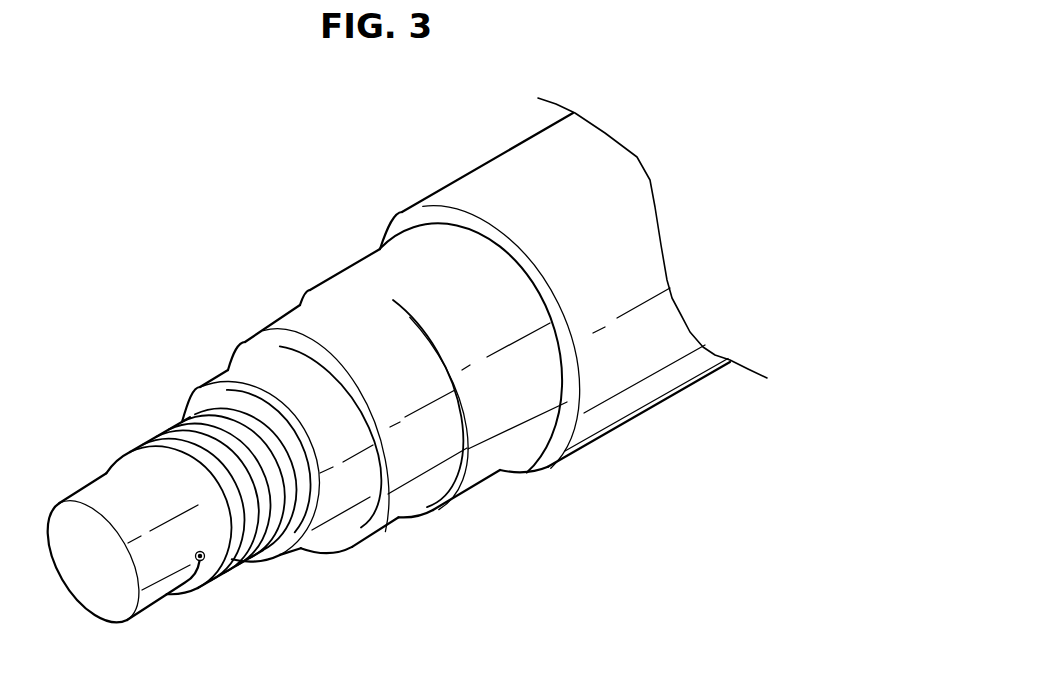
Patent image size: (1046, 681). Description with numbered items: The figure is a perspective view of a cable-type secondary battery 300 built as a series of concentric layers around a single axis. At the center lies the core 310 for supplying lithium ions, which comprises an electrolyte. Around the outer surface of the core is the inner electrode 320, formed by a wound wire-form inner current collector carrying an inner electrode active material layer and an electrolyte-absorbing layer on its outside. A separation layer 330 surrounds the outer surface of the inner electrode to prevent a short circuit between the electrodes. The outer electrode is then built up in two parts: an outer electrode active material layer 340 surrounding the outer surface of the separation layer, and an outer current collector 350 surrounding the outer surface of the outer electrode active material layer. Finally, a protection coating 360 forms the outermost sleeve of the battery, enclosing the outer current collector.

The cable-type secondary battery 300 is at (248, 253).
The core for supplying lithium ions 310 is at (157, 580).
The inner electrode 320 is at (237, 560).
The separation layer 330 is at (327, 525).
The outer electrode active material layer 340 is at (410, 497).
The outer current collector 350 is at (493, 463).
The protection coating 360 is at (620, 413).